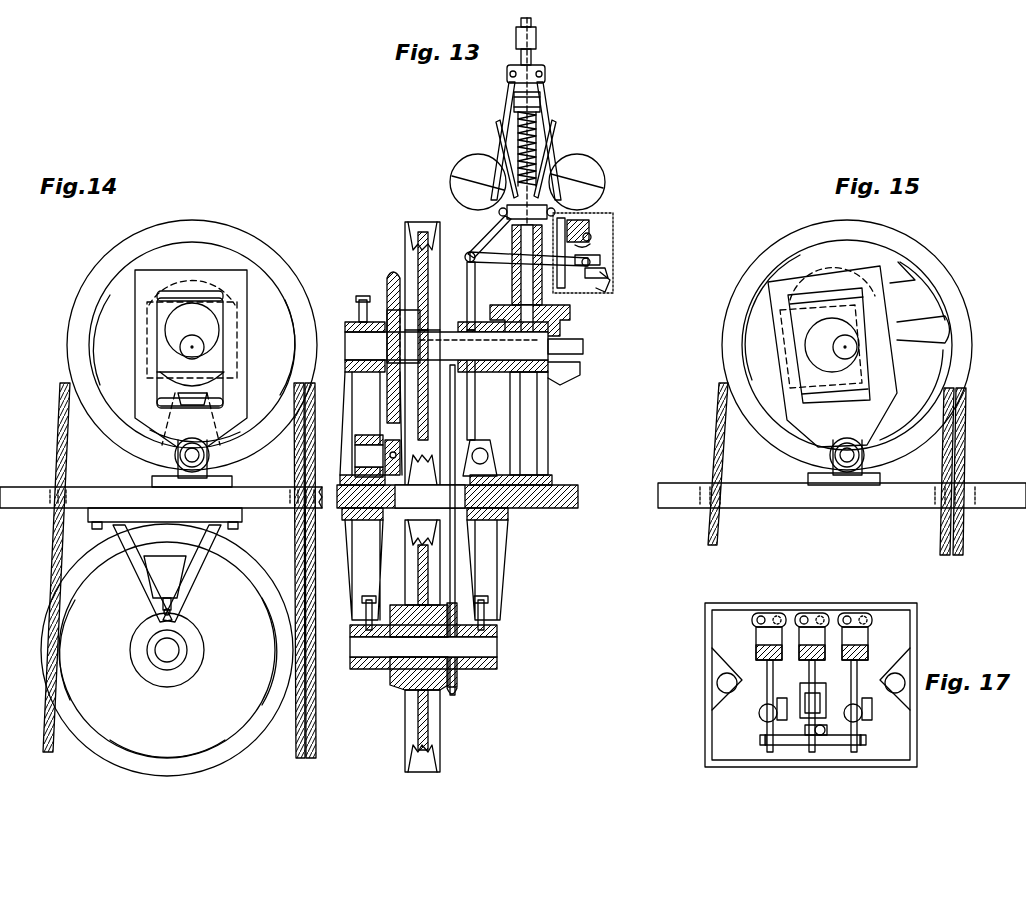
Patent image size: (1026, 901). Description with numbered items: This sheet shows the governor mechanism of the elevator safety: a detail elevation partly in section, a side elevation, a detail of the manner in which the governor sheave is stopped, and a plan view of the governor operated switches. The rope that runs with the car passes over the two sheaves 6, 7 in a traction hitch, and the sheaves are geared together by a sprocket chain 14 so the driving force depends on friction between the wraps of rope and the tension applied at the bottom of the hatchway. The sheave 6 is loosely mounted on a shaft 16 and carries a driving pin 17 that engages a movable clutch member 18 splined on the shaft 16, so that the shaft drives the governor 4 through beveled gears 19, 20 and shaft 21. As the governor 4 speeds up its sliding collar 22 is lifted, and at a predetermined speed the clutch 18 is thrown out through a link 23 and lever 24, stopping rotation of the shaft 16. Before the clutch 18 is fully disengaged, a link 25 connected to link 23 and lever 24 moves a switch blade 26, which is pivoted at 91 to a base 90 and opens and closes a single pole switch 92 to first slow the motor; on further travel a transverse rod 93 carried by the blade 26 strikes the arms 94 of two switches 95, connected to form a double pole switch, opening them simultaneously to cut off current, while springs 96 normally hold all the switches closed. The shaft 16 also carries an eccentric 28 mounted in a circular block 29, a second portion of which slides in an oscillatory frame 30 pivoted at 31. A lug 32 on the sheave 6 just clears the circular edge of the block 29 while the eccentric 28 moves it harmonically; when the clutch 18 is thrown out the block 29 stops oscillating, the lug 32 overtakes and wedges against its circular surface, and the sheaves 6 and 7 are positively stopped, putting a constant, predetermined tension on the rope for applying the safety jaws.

In FIG. 13, the governor 4 is at (527, 174).
In FIG. 14, the sheave 6 is at (192, 345).
In FIG. 15, the sheave 6 is at (780, 246).
In FIG. 13, the sheave 6 is at (457, 540).
In FIG. 14, the sheave 7 is at (167, 650).
In FIG. 13, the sheave 7 is at (415, 724).
In FIG. 13, the sprocket chain 14 is at (456, 573).
In FIG. 14, the shaft 16 is at (184, 349).
In FIG. 15, the shaft 16 is at (850, 348).
In FIG. 13, the shaft 16 is at (464, 346).
In FIG. 13, the driving pin 17 is at (380, 378).
In FIG. 13, the movable clutch member 18 is at (522, 372).
In FIG. 13, the beveled gear 19 is at (580, 370).
In FIG. 13, the beveled gear 20 is at (572, 312).
In FIG. 13, the shaft 21 is at (520, 276).
In FIG. 13, the sliding collar 22 is at (503, 206).
In FIG. 13, the link 23 is at (492, 240).
In FIG. 13, the lever 24 is at (476, 418).
In FIG. 13, the link 25 is at (480, 262).
In FIG. 17, the switch blade 26 is at (812, 745).
In FIG. 13, the switch blade 26 is at (592, 246).
In FIG. 14, the eccentric 28 is at (192, 330).
In FIG. 15, the eccentric 28 is at (832, 345).
In FIG. 13, the eccentric 28 is at (403, 336).
In FIG. 14, the circular block 29 is at (205, 365).
In FIG. 15, the circular block 29 is at (810, 372).
In FIG. 13, the circular block 29 is at (405, 262).
In FIG. 14, the oscillatory frame 30 is at (232, 282).
In FIG. 15, the oscillatory frame 30 is at (832, 356).
In FIG. 13, the oscillatory frame 30 is at (385, 279).
In FIG. 14, the pivot 31 is at (184, 457).
In FIG. 15, the pivot 31 is at (838, 458).
In FIG. 13, the pivot 31 is at (369, 456).
In FIG. 14, the lug 32 is at (200, 402).
In FIG. 15, the lug 32 is at (919, 302).
In FIG. 13, the lug 32 is at (388, 410).
In FIG. 17, the base 90 is at (800, 636).
In FIG. 13, the base 90 is at (606, 207).
In FIG. 17, the pivot 91 is at (812, 645).
In FIG. 13, the pivot 91 is at (600, 235).
In FIG. 17, the single pole switch 92 is at (823, 737).
In FIG. 17, the transverse rod 93 is at (790, 745).
In FIG. 13, the transverse rod 93 is at (610, 292).
In FIG. 17, the switch arm 94 is at (812, 745).
In FIG. 13, the switch arm 94 is at (606, 272).
In FIG. 17, the switch 95 is at (760, 705).
In FIG. 13, the spring 96 is at (588, 233).